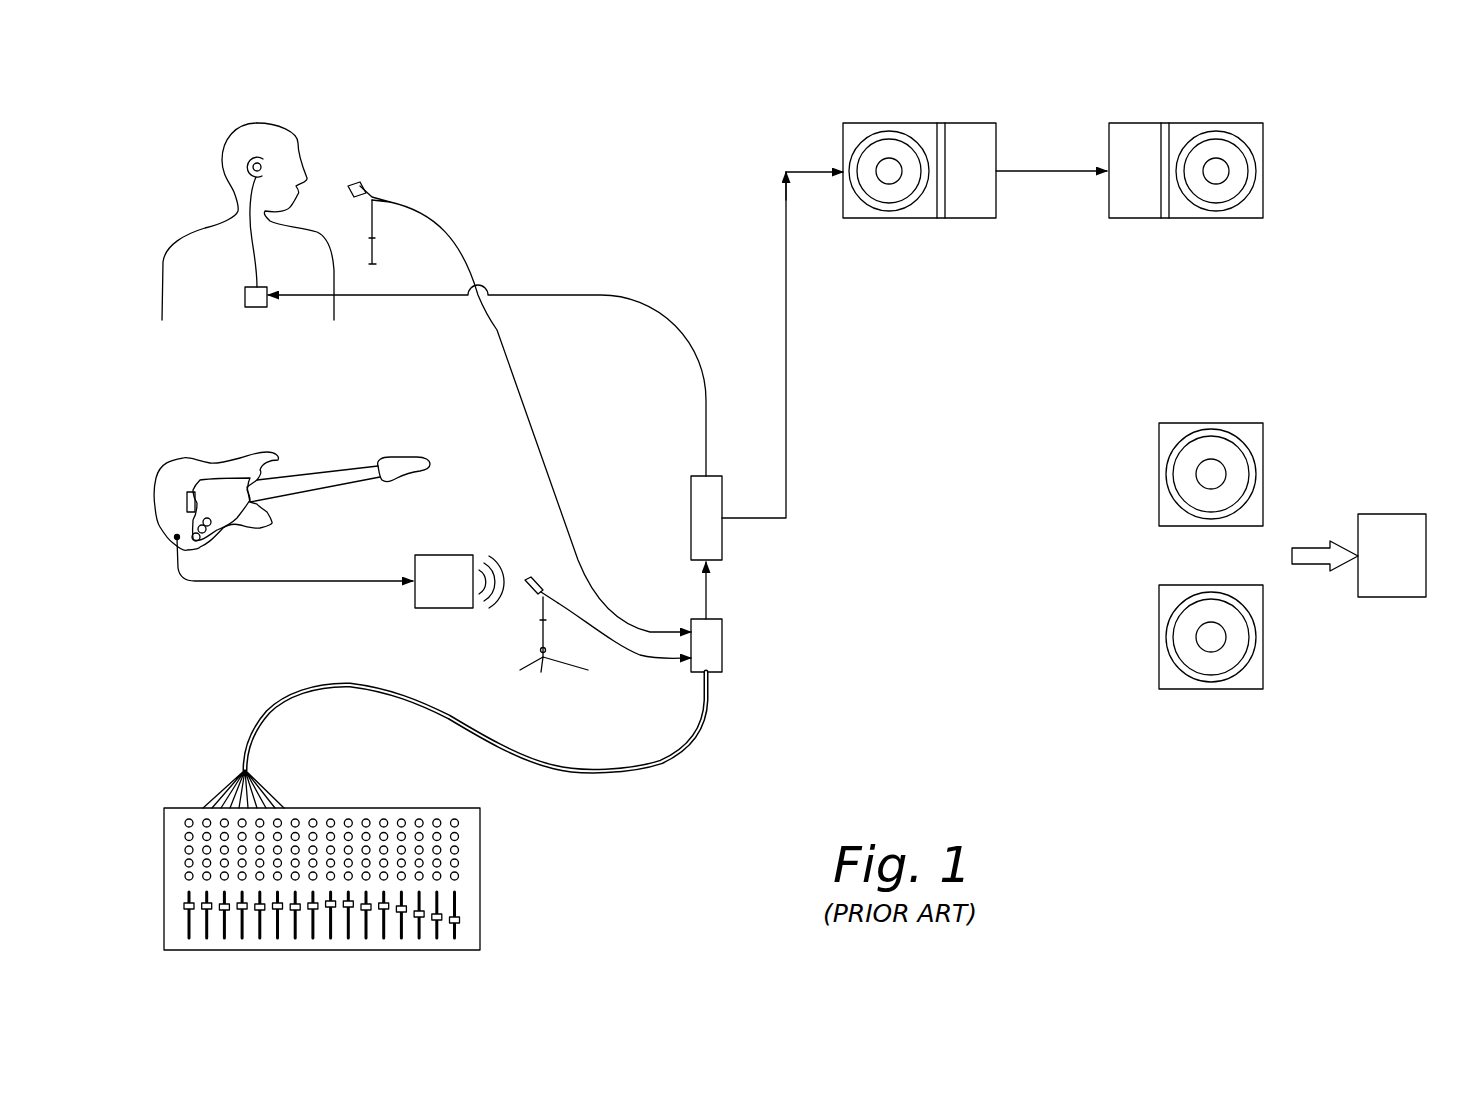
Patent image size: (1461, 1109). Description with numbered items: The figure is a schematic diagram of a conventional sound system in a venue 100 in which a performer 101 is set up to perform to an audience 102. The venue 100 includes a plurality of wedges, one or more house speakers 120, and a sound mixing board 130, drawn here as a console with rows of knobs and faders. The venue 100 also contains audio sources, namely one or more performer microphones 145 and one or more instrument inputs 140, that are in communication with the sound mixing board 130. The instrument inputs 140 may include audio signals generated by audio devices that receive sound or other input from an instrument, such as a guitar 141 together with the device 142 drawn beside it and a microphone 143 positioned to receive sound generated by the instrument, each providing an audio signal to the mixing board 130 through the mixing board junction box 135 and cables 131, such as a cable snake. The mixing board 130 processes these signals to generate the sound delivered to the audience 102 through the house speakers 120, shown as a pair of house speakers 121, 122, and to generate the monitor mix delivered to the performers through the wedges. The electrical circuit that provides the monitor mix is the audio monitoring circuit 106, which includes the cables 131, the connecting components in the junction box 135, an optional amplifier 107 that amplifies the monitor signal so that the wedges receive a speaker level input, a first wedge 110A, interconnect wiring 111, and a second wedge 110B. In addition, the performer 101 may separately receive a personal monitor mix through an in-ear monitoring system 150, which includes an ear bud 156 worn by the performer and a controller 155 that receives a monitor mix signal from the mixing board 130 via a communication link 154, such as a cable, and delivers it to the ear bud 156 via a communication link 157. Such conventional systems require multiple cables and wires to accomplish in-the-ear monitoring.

The venue 100 is at (1074, 845).
The performer 101 is at (236, 135).
The audience 102 is at (1386, 513).
The audio monitoring circuit 106 is at (794, 140).
The amplifier 107 is at (690, 518).
The first wedge 110A is at (973, 219).
The second wedge 110B is at (1238, 219).
The interconnect wiring 111 is at (1045, 166).
The house speakers 120 is at (1141, 556).
The house speaker 121 is at (1208, 399).
The house speaker 122 is at (1208, 711).
The sound mixing board 130 is at (482, 847).
The cables 131 is at (302, 692).
The mixing board junction box 135 is at (724, 641).
The instrument inputs 140 is at (329, 493).
The guitar 141 is at (262, 450).
The guitar amplifier 142 is at (458, 553).
The microphone 143 is at (512, 632).
The performer microphones 145 is at (394, 184).
The in-ear monitoring system 150 is at (280, 314).
The communication link 154 is at (546, 290).
The controller 155 is at (244, 297).
The ear bud 156 is at (250, 170).
The communication link 157 is at (255, 253).